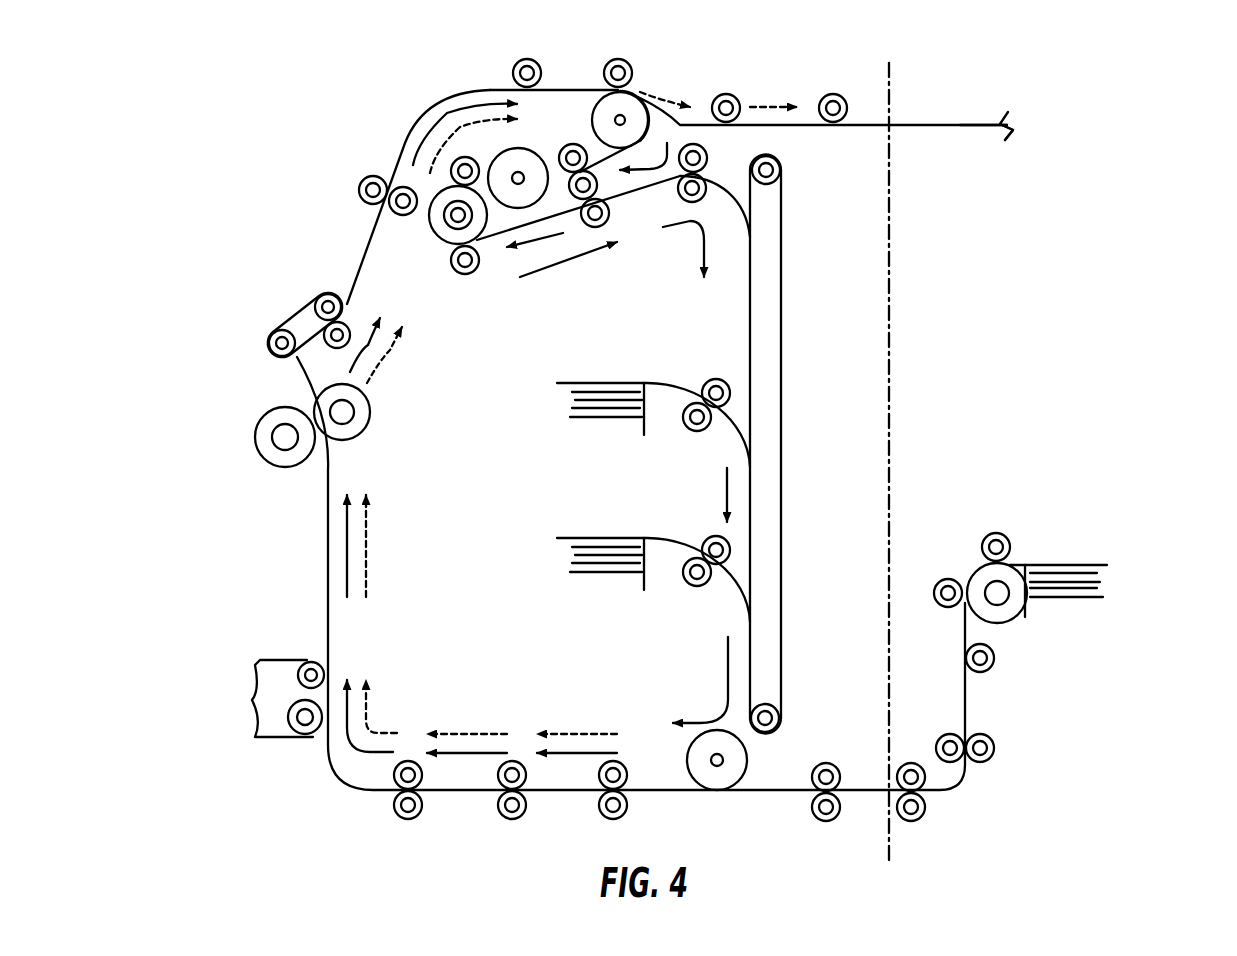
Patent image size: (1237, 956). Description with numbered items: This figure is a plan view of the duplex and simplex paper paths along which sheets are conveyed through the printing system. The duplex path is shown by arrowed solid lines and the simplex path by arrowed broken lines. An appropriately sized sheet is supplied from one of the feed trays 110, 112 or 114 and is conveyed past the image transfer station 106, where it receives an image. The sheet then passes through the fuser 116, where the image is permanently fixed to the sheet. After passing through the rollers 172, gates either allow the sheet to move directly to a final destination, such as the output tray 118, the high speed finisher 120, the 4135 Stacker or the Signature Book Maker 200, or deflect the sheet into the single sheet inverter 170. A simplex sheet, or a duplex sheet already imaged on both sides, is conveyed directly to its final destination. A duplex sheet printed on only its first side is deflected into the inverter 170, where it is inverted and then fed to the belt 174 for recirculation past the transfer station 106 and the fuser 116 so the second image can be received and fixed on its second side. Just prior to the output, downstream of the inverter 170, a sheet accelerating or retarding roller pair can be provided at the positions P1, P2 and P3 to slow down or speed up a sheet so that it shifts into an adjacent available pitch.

The image transfer station 106 is at (262, 754).
The feed tray 110 is at (1077, 543).
The feed tray 112 is at (553, 557).
The feed tray 114 is at (557, 407).
The fuser 116 is at (380, 403).
The output tray 118 is at (1091, 96).
The high speed finisher 120 is at (1091, 131).
The Signature Book Maker 200 is at (1091, 167).
The 4135 Stacker 4135 is at (1140, 188).
The single sheet inverter 170 is at (487, 254).
The rollers 172 is at (631, 93).
The belt 174 is at (782, 408).
The position P1 is at (873, 122).
The position P2 is at (812, 122).
The position P3 is at (700, 122).